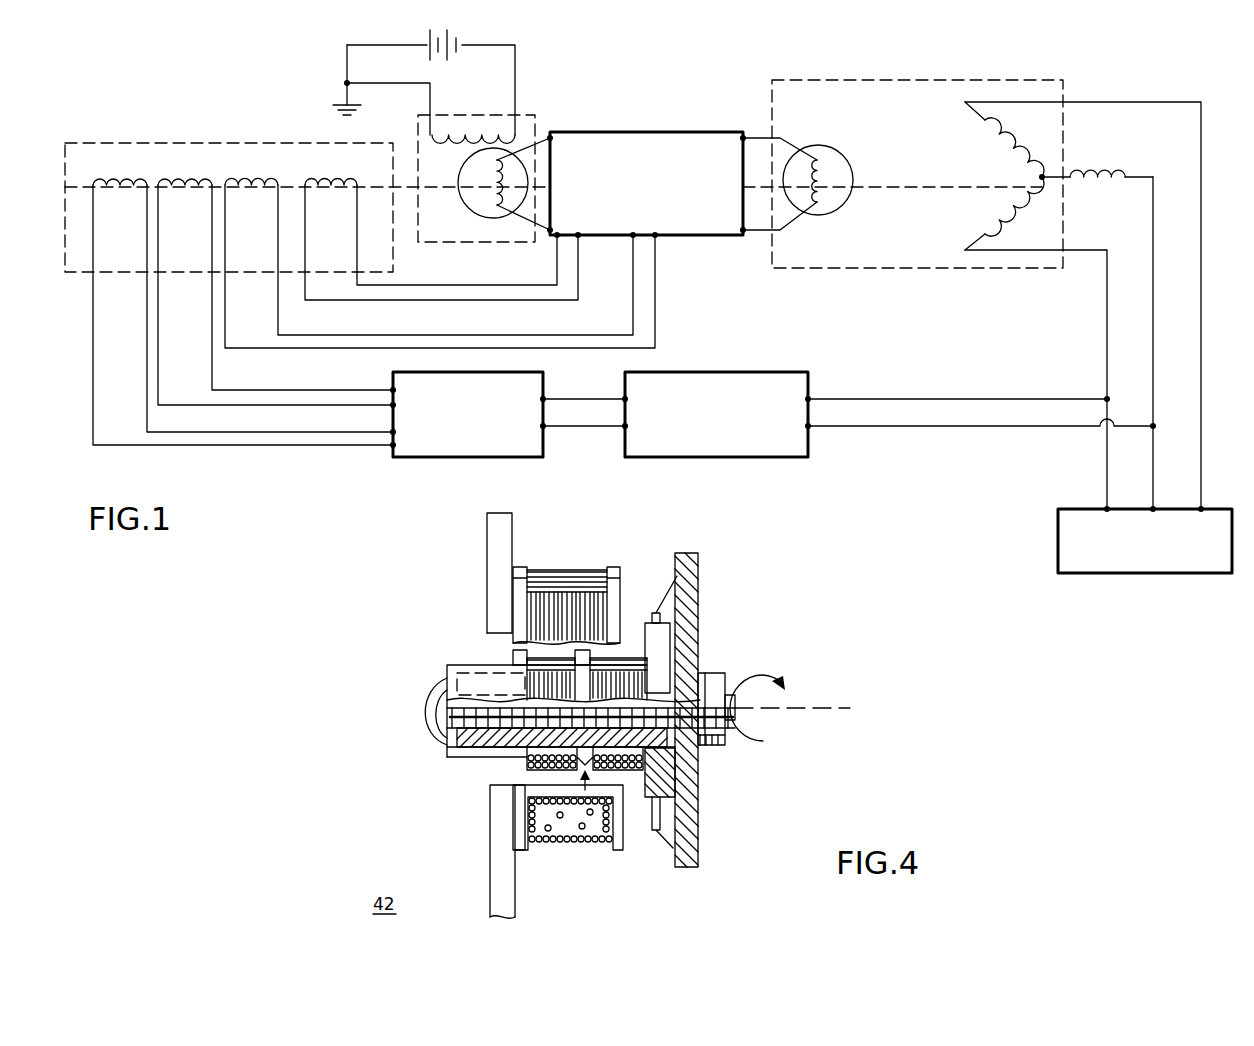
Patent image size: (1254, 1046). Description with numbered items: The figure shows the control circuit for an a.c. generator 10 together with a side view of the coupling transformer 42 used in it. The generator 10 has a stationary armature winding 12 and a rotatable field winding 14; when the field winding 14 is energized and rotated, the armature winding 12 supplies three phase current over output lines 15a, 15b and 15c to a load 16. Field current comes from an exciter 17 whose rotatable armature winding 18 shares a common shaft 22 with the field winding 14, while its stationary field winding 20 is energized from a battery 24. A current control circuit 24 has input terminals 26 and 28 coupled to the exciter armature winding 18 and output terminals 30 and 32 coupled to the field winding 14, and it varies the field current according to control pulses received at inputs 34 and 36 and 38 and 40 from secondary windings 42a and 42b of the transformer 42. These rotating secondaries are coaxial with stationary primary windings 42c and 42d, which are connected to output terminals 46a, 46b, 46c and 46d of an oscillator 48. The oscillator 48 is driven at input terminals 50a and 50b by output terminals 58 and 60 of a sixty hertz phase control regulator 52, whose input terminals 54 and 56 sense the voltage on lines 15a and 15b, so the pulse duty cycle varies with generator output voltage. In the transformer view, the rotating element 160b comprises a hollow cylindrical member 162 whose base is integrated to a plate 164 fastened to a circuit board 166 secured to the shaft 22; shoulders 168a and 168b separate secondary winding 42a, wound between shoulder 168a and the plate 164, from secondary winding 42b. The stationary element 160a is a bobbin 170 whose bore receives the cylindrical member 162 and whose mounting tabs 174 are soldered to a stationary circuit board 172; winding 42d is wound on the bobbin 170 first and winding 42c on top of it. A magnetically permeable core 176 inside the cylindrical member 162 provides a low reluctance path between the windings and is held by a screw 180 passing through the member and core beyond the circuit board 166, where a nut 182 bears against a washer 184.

In FIG. 1, the a.c. generator 10 is at (958, 270).
In FIG. 1, the armature winding 12 is at (1038, 223).
In FIG. 1, the field winding 14 is at (826, 160).
In FIG. 1, the output line 15a is at (1107, 352).
In FIG. 1, the output line 15b is at (1153, 322).
In FIG. 1, the output line 15c is at (1200, 292).
In FIG. 1, the load 16 is at (1058, 540).
In FIG. 1, the exciter 17 is at (470, 242).
In FIG. 1, the rotatable armature winding 18 is at (485, 178).
In FIG. 1, the stationary field winding 20 is at (490, 132).
In FIG. 1, the shaft 22 is at (975, 180).
In FIG. 4, the shaft 22 is at (822, 708).
In FIG. 1, the current control circuit 24 is at (462, 35).
In FIG. 1, the input terminal 26 is at (553, 138).
In FIG. 1, the input terminal 28 is at (549, 236).
In FIG. 1, the output terminal 30 is at (745, 135).
In FIG. 1, the output terminal 32 is at (745, 236).
In FIG. 1, the control circuit input 34 is at (576, 300).
In FIG. 1, the control circuit input 36 is at (580, 240).
In FIG. 1, the control circuit input 38 is at (636, 240).
In FIG. 1, the control circuit input 40 is at (658, 240).
In FIG. 1, the coupling transformer 42 is at (553, 207).
In FIG. 1, the secondary winding 42a is at (347, 182).
In FIG. 4, the secondary winding 42a is at (622, 774).
In FIG. 1, the secondary winding 42b is at (258, 182).
In FIG. 4, the secondary winding 42b is at (540, 773).
In FIG. 1, the primary winding 42c is at (128, 182).
In FIG. 4, the primary winding 42c is at (545, 846).
In FIG. 1, the primary winding 42d is at (190, 182).
In FIG. 4, the primary winding 42d is at (598, 846).
In FIG. 1, the oscillator output terminal 46a is at (392, 446).
In FIG. 1, the oscillator output terminal 46b is at (391, 433).
In FIG. 1, the oscillator output terminal 46c is at (390, 405).
In FIG. 1, the oscillator output terminal 46d is at (392, 390).
In FIG. 1, the oscillator 48 is at (490, 458).
In FIG. 1, the oscillator input terminal 50a is at (545, 399).
In FIG. 1, the oscillator input terminal 50b is at (545, 428).
In FIG. 1, the 60 hertz phase control regulator 52 is at (757, 458).
In FIG. 1, the regulator input terminal 54 is at (810, 399).
In FIG. 1, the regulator input terminal 56 is at (810, 427).
In FIG. 1, the regulator output terminal 58 is at (625, 397).
In FIG. 1, the regulator output terminal 60 is at (625, 428).
In FIG. 4, the stationary element 160a is at (623, 852).
In FIG. 4, the rotating element 160b is at (668, 853).
In FIG. 4, the hollow cylindrical member 162 is at (447, 746).
In FIG. 4, the plate 164 is at (656, 612).
In FIG. 4, the circuit board 166 is at (690, 576).
In FIG. 4, the shoulder 168a is at (647, 657).
In FIG. 4, the shoulder 168b is at (515, 657).
In FIG. 4, the bobbin 170 is at (513, 826).
In FIG. 4, the stationary circuit board 172 is at (490, 861).
In FIG. 4, the mounting tabs 174 is at (519, 565).
In FIG. 4, the magnetically permeable core 176 is at (470, 750).
In FIG. 4, the screw 180 is at (445, 692).
In FIG. 4, the nut 182 is at (715, 674).
In FIG. 4, the washer 184 is at (708, 750).